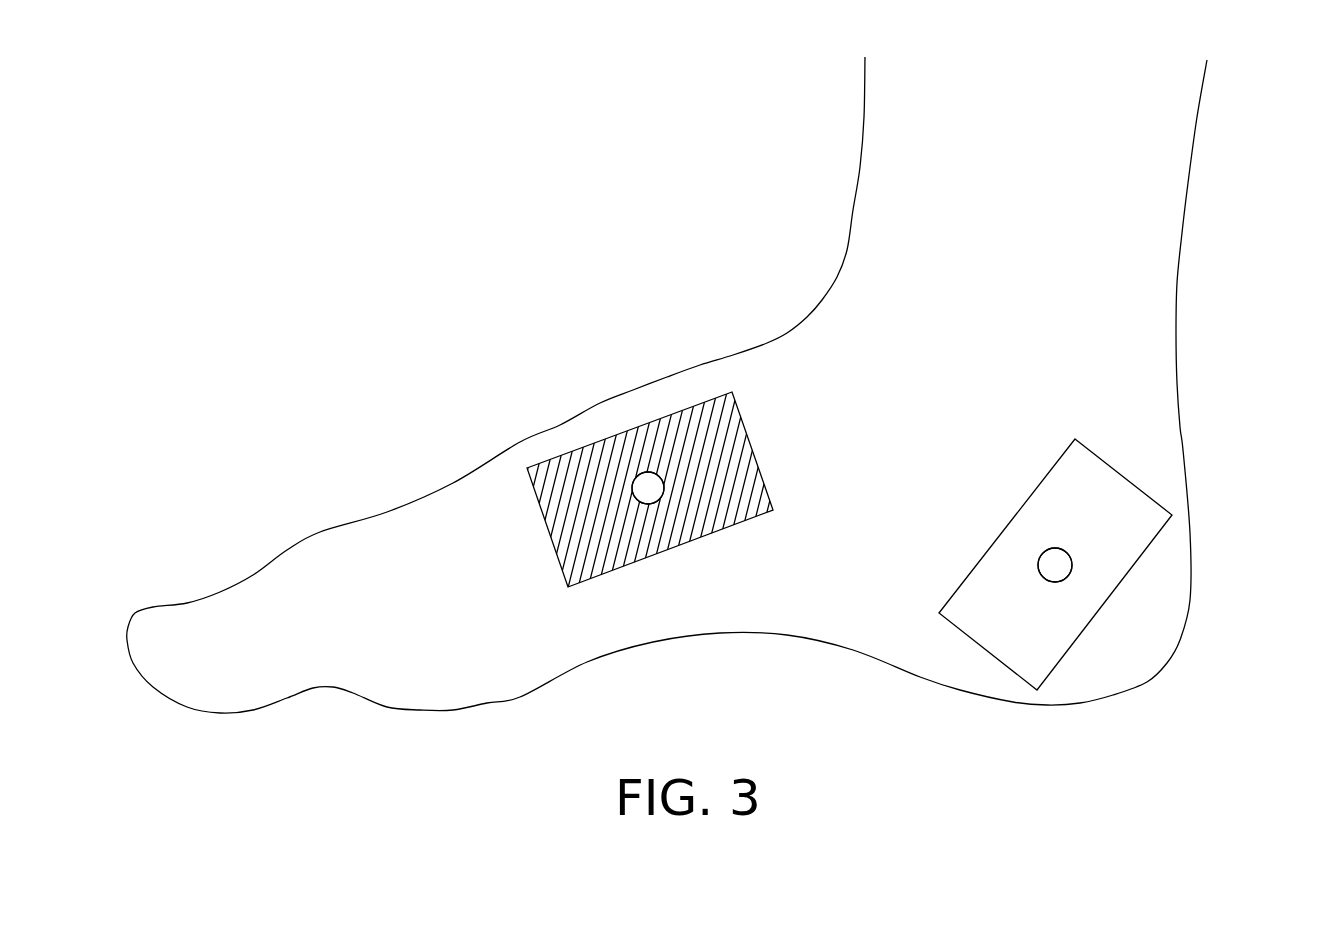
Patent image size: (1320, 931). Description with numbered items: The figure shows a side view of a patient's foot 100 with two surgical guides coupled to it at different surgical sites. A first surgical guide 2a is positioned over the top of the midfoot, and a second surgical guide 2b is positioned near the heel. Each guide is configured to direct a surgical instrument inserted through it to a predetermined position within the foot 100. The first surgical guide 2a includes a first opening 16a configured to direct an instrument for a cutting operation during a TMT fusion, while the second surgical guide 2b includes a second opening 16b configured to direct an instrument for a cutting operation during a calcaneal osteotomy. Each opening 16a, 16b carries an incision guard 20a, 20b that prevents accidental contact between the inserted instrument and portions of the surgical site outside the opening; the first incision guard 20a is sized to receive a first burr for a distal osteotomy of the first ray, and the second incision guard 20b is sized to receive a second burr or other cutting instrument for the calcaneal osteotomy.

The foot 100 is at (640, 133).
The first surgical guide 2a is at (645, 424).
The second surgical guide 2b is at (1127, 477).
The first opening 16a is at (680, 507).
The second opening 16b is at (1088, 555).
The first incision guard 20a is at (648, 505).
The second incision guard 20b is at (1067, 580).